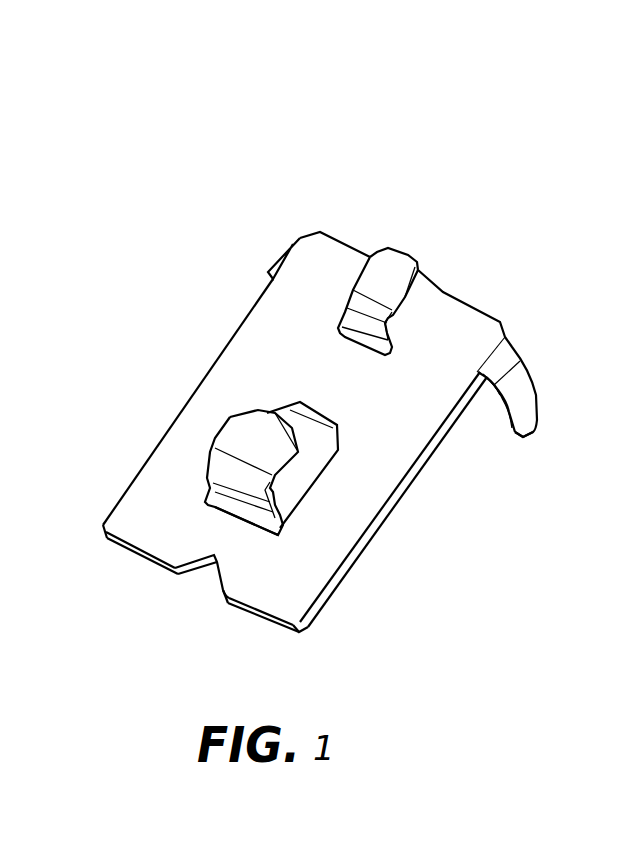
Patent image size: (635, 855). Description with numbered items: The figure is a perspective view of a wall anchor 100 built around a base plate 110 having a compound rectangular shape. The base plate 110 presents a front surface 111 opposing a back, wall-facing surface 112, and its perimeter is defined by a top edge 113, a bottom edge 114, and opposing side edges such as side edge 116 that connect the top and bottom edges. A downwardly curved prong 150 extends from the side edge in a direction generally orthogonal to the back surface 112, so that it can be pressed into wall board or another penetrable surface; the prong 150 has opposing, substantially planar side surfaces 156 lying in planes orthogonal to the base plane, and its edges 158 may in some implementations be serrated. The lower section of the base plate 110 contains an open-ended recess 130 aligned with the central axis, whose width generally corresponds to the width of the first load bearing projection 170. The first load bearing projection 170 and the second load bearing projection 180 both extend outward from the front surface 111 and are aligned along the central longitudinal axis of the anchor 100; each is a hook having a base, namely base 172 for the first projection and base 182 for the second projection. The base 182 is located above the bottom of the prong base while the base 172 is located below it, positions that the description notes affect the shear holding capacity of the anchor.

The wall anchor 100 is at (178, 214).
The base plate 110 is at (322, 255).
The front surface 111 is at (310, 565).
The back, wall-facing surface 112 is at (166, 607).
The top edge 113 is at (462, 300).
The bottom edge 114 is at (258, 617).
The side edge 116 is at (233, 337).
The recess 130 is at (315, 452).
The prong 150 is at (526, 381).
The side surface 156 is at (528, 397).
The edge 158 is at (503, 410).
The first load bearing projection 170 is at (230, 447).
The base 172 is at (272, 498).
The second load bearing projection 180 is at (393, 265).
The base 182 is at (417, 298).